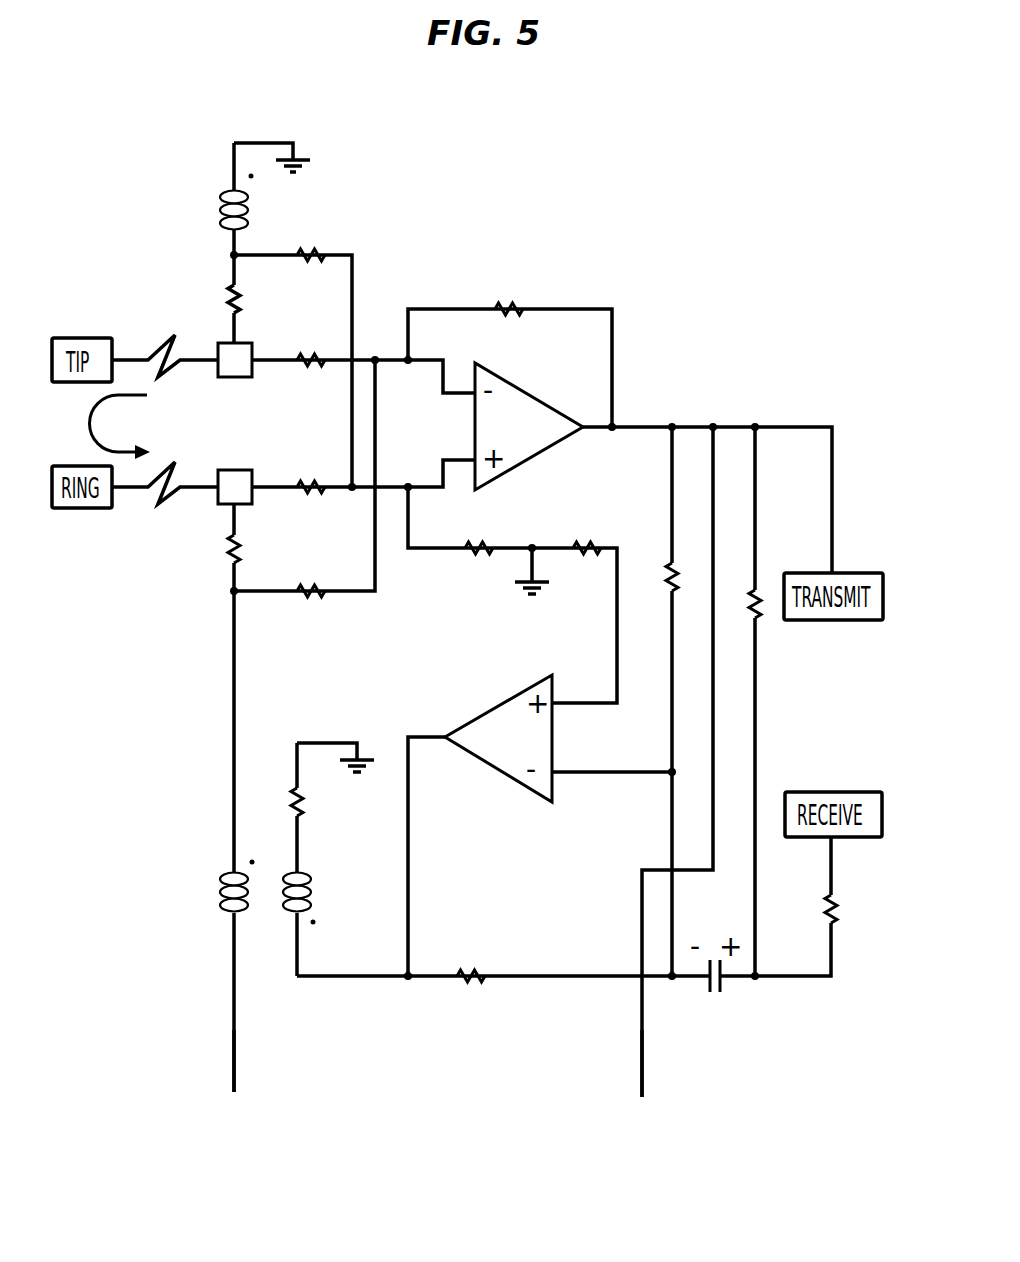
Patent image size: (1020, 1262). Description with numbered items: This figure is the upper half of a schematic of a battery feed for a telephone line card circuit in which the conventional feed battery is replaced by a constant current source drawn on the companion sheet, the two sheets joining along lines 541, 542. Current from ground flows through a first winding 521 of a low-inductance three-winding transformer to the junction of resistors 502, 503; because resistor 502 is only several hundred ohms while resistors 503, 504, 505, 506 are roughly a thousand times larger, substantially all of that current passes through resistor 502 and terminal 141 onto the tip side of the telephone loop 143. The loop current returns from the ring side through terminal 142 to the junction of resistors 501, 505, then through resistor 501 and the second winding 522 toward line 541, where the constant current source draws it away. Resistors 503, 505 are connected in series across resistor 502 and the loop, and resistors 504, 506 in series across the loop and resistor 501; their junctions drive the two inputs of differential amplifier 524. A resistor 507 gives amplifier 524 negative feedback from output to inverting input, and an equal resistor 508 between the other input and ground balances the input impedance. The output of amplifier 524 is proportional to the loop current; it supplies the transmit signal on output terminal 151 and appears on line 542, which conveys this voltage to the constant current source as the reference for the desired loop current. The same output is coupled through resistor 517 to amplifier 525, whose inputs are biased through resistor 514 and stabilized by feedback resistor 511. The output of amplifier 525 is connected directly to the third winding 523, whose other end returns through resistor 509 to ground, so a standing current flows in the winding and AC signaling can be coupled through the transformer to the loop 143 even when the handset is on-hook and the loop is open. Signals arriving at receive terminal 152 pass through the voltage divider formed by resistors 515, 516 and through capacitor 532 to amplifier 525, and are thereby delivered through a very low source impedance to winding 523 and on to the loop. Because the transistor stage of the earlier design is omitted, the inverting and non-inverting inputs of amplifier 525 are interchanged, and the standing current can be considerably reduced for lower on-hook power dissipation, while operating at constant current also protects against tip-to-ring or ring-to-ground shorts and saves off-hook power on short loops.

The terminal 141 is at (240, 377).
The terminal 142 is at (240, 470).
The telephone loop 143 is at (95, 419).
The output terminal 151 is at (830, 620).
The receive terminal 152 is at (838, 792).
The resistor 501 is at (228, 550).
The resistor 502 is at (230, 299).
The resistor 503 is at (312, 247).
The resistor 504 is at (308, 354).
The resistor 505 is at (314, 497).
The resistor 506 is at (314, 600).
The resistor 507 is at (506, 301).
The resistor 508 is at (478, 558).
The resistor 509 is at (310, 795).
The resistor 511 is at (470, 968).
The resistor 514 is at (588, 560).
The resistor 515 is at (842, 910).
The resistor 516 is at (753, 593).
The resistor 517 is at (670, 569).
The winding 521 is at (224, 206).
The second winding 522 is at (221, 893).
The third winding 523 is at (312, 886).
The differential amplifier 524 is at (531, 395).
The amplifier 525 is at (499, 704).
The capacitor 532 is at (722, 990).
The line 541 is at (236, 1040).
The line 542 is at (643, 1044).